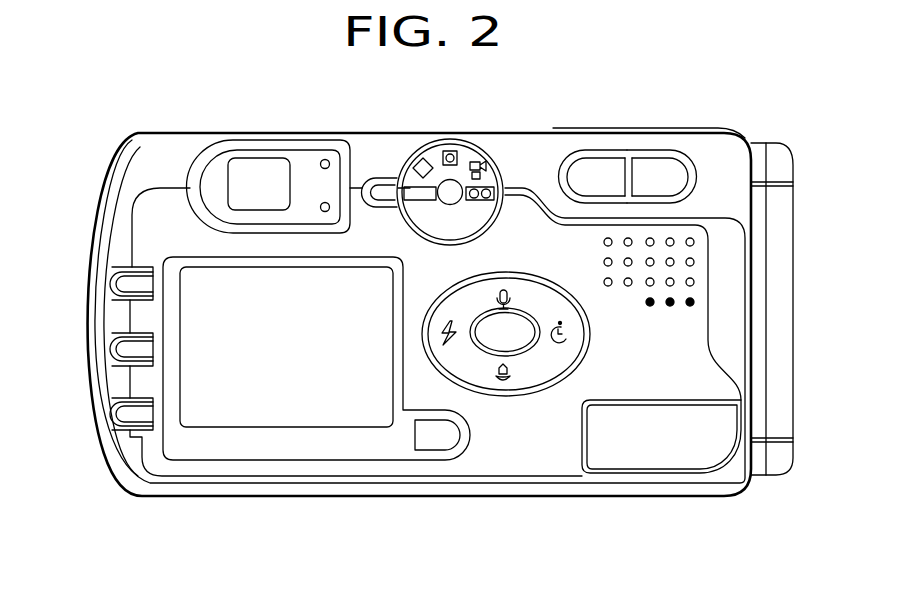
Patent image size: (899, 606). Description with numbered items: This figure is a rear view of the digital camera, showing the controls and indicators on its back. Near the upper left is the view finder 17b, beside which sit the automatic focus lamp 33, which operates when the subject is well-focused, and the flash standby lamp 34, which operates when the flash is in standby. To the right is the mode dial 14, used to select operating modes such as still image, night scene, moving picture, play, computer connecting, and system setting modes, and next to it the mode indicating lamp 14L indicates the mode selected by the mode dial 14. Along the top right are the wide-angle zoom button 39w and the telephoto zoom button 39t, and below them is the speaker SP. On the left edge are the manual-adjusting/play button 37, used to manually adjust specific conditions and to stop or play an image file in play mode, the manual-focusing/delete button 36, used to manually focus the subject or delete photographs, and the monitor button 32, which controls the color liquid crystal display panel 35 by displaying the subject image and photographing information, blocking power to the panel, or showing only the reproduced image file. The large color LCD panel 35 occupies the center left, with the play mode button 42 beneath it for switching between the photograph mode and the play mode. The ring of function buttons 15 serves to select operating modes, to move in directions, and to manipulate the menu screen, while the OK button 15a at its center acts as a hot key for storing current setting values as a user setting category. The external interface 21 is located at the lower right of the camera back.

The view finder 17b is at (261, 168).
The automatic focus lamp 33 is at (322, 160).
The flash standby lamp 34 is at (330, 204).
The mode indicating lamp 14L is at (386, 190).
The mode dial 14 is at (470, 160).
The wide-angle zoom button 39w is at (597, 177).
The telephoto zoom button 39t is at (662, 177).
The speaker SP is at (694, 302).
The manual-adjusting/play button 37 is at (123, 285).
The manual-focusing/delete button 36 is at (123, 350).
The monitor button 32 is at (123, 417).
The color liquid crystal display panel 35 is at (280, 407).
The play mode button 42 is at (432, 441).
The function buttons 15 is at (507, 385).
The OK button 15a is at (518, 350).
The external interface 21 is at (705, 454).